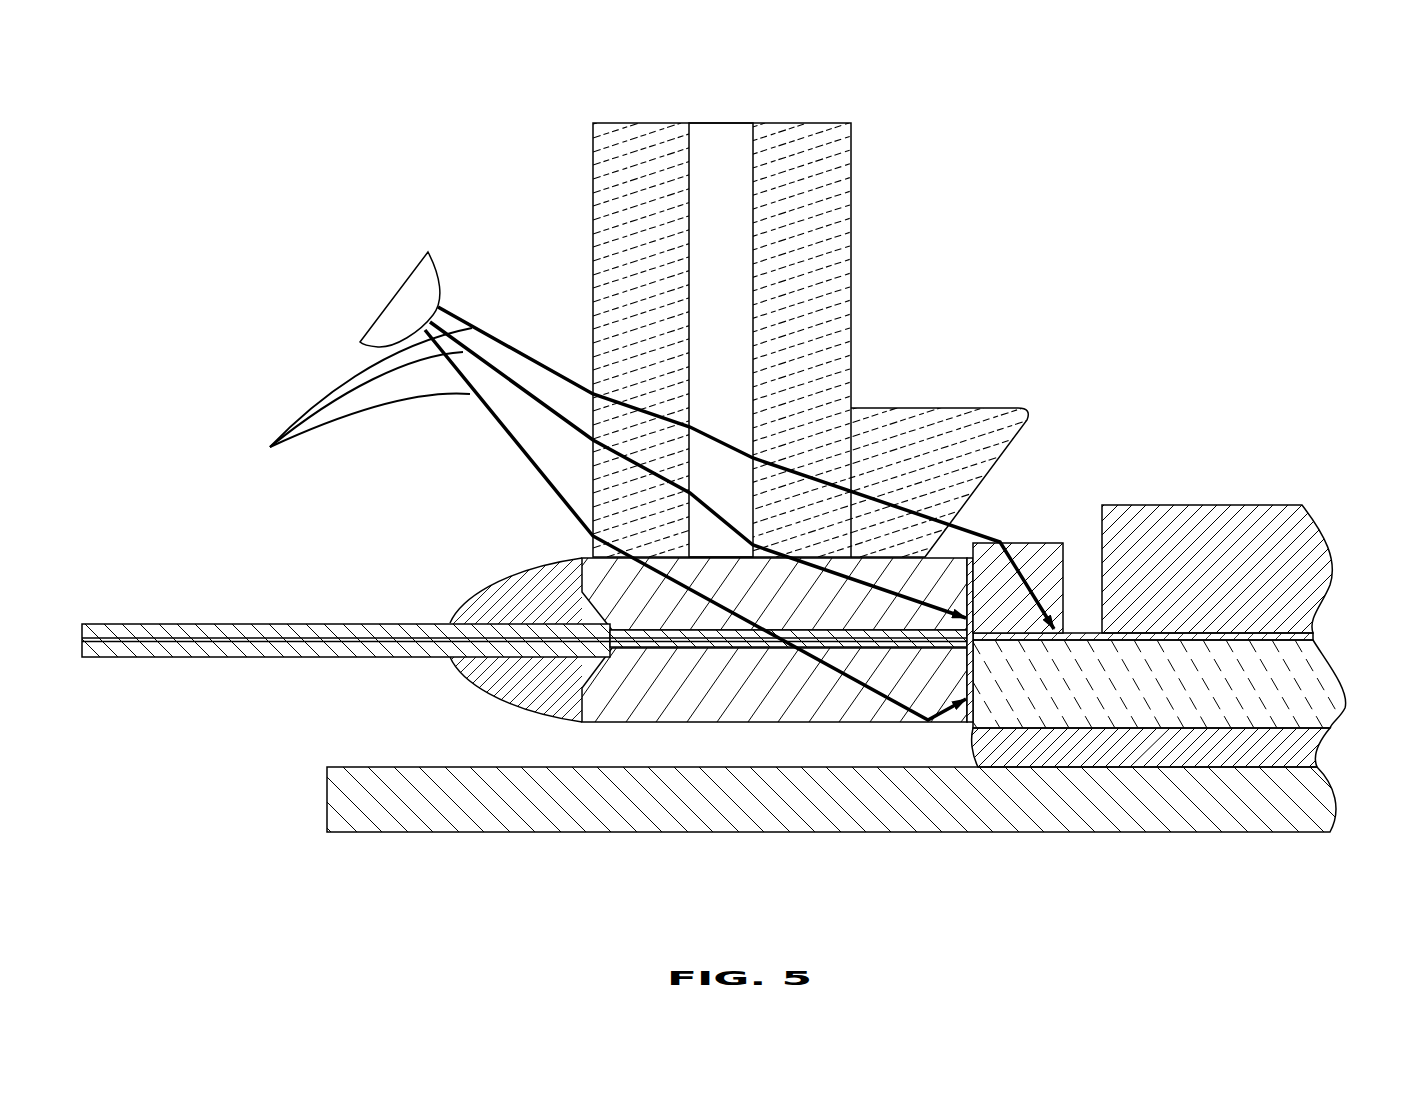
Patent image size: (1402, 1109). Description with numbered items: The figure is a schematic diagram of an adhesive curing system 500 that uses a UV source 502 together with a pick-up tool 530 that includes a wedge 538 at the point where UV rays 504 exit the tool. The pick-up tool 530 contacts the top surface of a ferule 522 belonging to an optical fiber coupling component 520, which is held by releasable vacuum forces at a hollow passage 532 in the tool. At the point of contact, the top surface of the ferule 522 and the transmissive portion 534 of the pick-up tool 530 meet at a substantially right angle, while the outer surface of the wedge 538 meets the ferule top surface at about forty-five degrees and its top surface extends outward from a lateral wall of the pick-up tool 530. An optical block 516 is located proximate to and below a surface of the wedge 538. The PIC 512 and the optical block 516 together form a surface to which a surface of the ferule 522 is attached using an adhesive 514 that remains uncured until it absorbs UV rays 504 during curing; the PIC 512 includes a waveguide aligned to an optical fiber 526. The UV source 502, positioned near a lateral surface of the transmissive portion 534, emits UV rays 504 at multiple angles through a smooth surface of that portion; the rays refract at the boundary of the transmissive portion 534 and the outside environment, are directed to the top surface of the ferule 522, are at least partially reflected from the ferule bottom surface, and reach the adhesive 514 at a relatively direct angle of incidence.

The adhesive curing system 500 is at (248, 165).
The UV source 502 is at (377, 323).
The UV rays 504 is at (642, 513).
The PIC 512 is at (1342, 717).
The adhesive 514 is at (967, 720).
The optical block 516 is at (1033, 542).
The optical fiber coupling component 520 is at (494, 559).
The ferule 522 is at (603, 607).
The optical fiber 526 is at (217, 657).
The pick-up tool 530 is at (744, 315).
The hollow passage 532 is at (725, 123).
The transmissive portion 534 is at (593, 182).
The wedge 538 is at (932, 408).